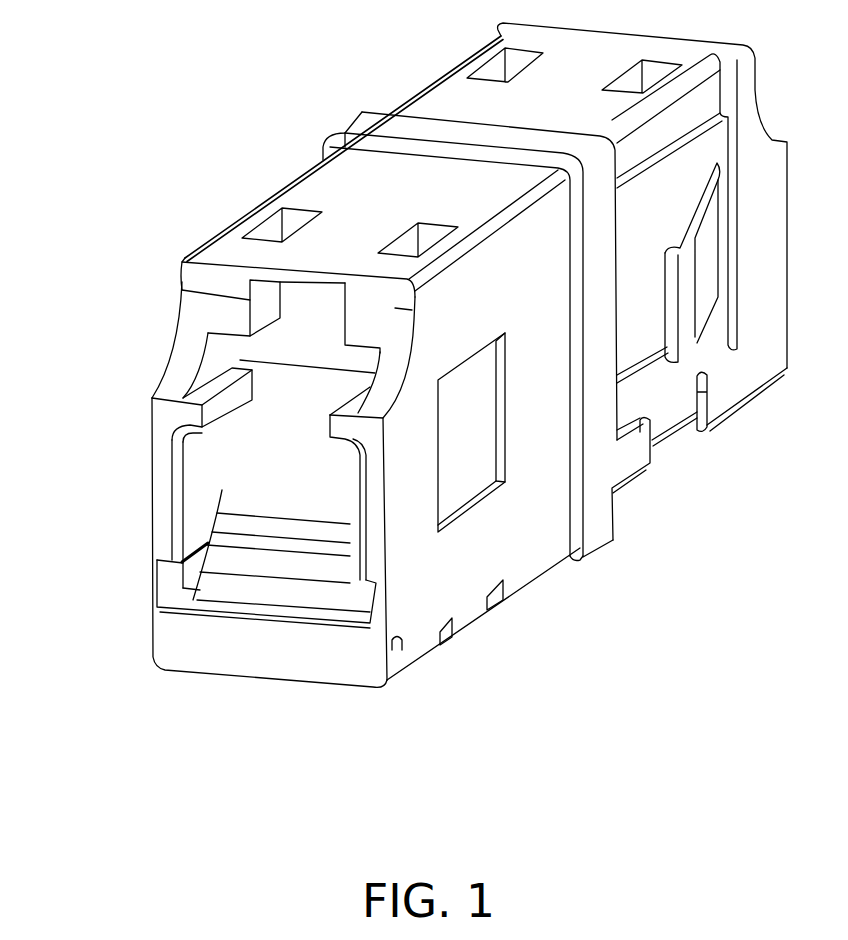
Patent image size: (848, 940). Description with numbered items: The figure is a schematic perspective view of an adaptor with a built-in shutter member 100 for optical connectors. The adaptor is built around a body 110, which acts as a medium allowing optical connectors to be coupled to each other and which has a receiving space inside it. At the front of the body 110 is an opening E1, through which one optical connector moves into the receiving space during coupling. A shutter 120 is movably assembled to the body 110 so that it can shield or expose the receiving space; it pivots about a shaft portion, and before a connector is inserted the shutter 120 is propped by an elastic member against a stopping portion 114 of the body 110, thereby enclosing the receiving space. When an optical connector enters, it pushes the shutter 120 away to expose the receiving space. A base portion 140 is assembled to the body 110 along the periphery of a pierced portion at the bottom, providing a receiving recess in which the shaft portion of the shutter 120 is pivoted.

The adaptor with a built-in shutter member 100 is at (417, 406).
The body 110 is at (484, 351).
The stopping portion 114 is at (213, 313).
The shutter 120 is at (272, 467).
The base portion 140 is at (418, 655).
The opening E1 is at (205, 502).